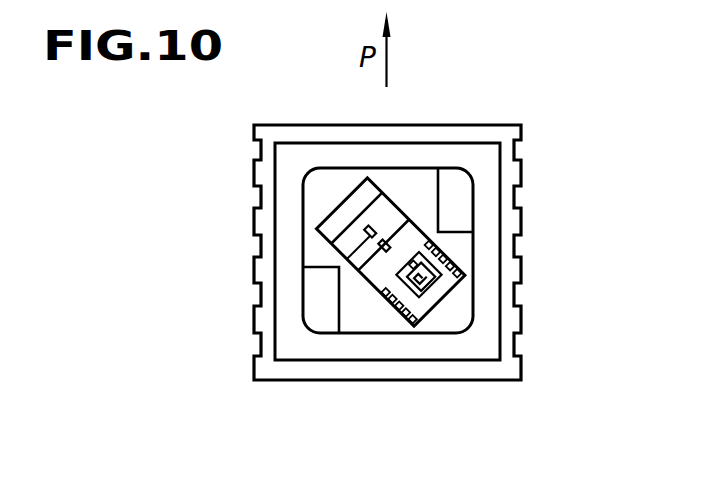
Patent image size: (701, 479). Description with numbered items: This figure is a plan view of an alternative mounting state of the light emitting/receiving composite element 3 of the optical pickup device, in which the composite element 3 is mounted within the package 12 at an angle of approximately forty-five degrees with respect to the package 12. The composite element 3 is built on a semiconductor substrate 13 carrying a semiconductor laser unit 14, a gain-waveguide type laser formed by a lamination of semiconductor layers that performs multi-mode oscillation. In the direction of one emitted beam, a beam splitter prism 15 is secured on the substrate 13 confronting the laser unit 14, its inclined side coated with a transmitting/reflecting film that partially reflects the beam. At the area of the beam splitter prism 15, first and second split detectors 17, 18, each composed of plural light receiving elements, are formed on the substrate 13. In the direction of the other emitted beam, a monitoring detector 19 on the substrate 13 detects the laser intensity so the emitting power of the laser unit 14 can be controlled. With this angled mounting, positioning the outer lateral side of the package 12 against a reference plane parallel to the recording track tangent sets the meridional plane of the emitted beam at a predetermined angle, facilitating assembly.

The light emitting/receiving composite element 3 is at (338, 241).
The package 12 is at (490, 240).
The semiconductor substrate 13 is at (458, 278).
The semiconductor laser unit 14 is at (397, 291).
The beam splitter prism 15 is at (392, 213).
The first split detector 17 is at (385, 247).
The second split detector 18 is at (338, 268).
The monitoring detector 19 is at (437, 298).